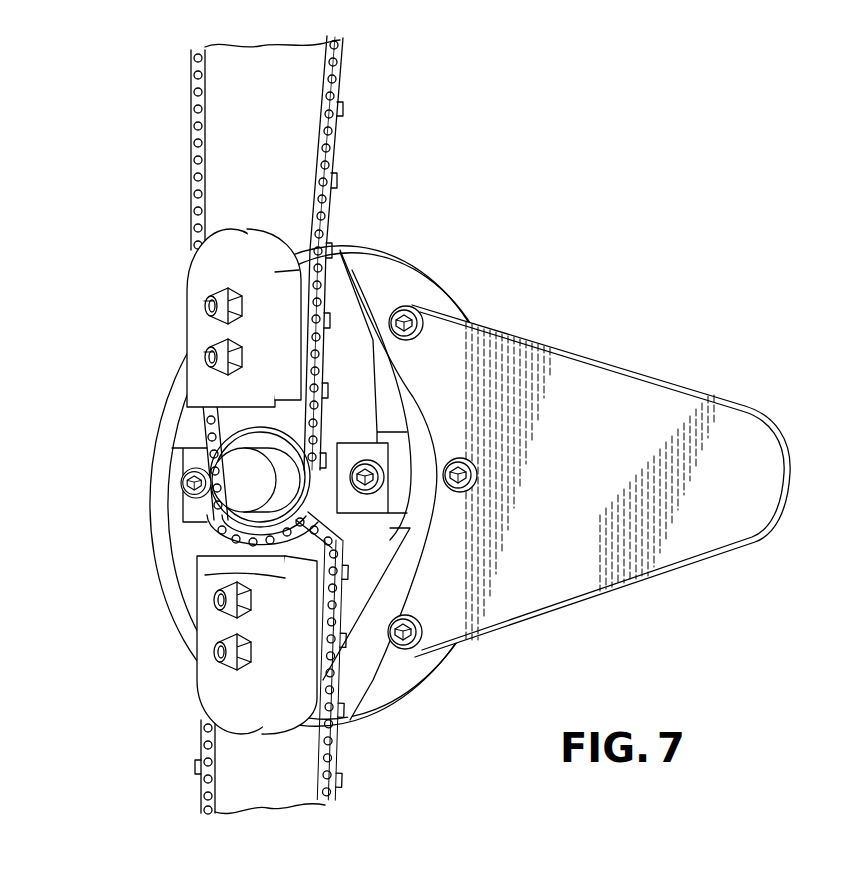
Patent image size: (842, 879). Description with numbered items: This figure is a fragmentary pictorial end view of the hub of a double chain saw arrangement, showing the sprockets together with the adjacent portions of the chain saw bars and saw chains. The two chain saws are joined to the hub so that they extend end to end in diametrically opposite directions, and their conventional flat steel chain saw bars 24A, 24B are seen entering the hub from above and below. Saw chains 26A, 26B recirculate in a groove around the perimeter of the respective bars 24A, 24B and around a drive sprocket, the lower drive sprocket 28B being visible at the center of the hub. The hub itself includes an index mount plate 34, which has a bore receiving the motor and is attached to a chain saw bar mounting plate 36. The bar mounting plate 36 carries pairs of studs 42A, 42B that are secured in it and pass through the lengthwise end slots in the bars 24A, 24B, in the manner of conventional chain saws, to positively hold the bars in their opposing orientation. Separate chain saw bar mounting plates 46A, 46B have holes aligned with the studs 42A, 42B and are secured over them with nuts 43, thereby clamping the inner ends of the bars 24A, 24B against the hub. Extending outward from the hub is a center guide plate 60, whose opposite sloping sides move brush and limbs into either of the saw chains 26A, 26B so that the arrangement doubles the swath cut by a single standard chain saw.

The chain saw bar 24A is at (287, 143).
The chain saw bar 24B is at (295, 775).
The saw chain 26A is at (342, 163).
The saw chain 26B is at (345, 748).
The drive sprocket 28B is at (280, 535).
The index mount plate 34 is at (410, 267).
The chain saw bar mounting plate 36 is at (167, 516).
The studs 42A is at (208, 358).
The studs 42B is at (213, 654).
The nuts 43 is at (238, 364).
The chain saw bar mounting plate 46A is at (207, 279).
The chain saw bar mounting plate 46B is at (223, 688).
The center guide plate 60 is at (598, 402).